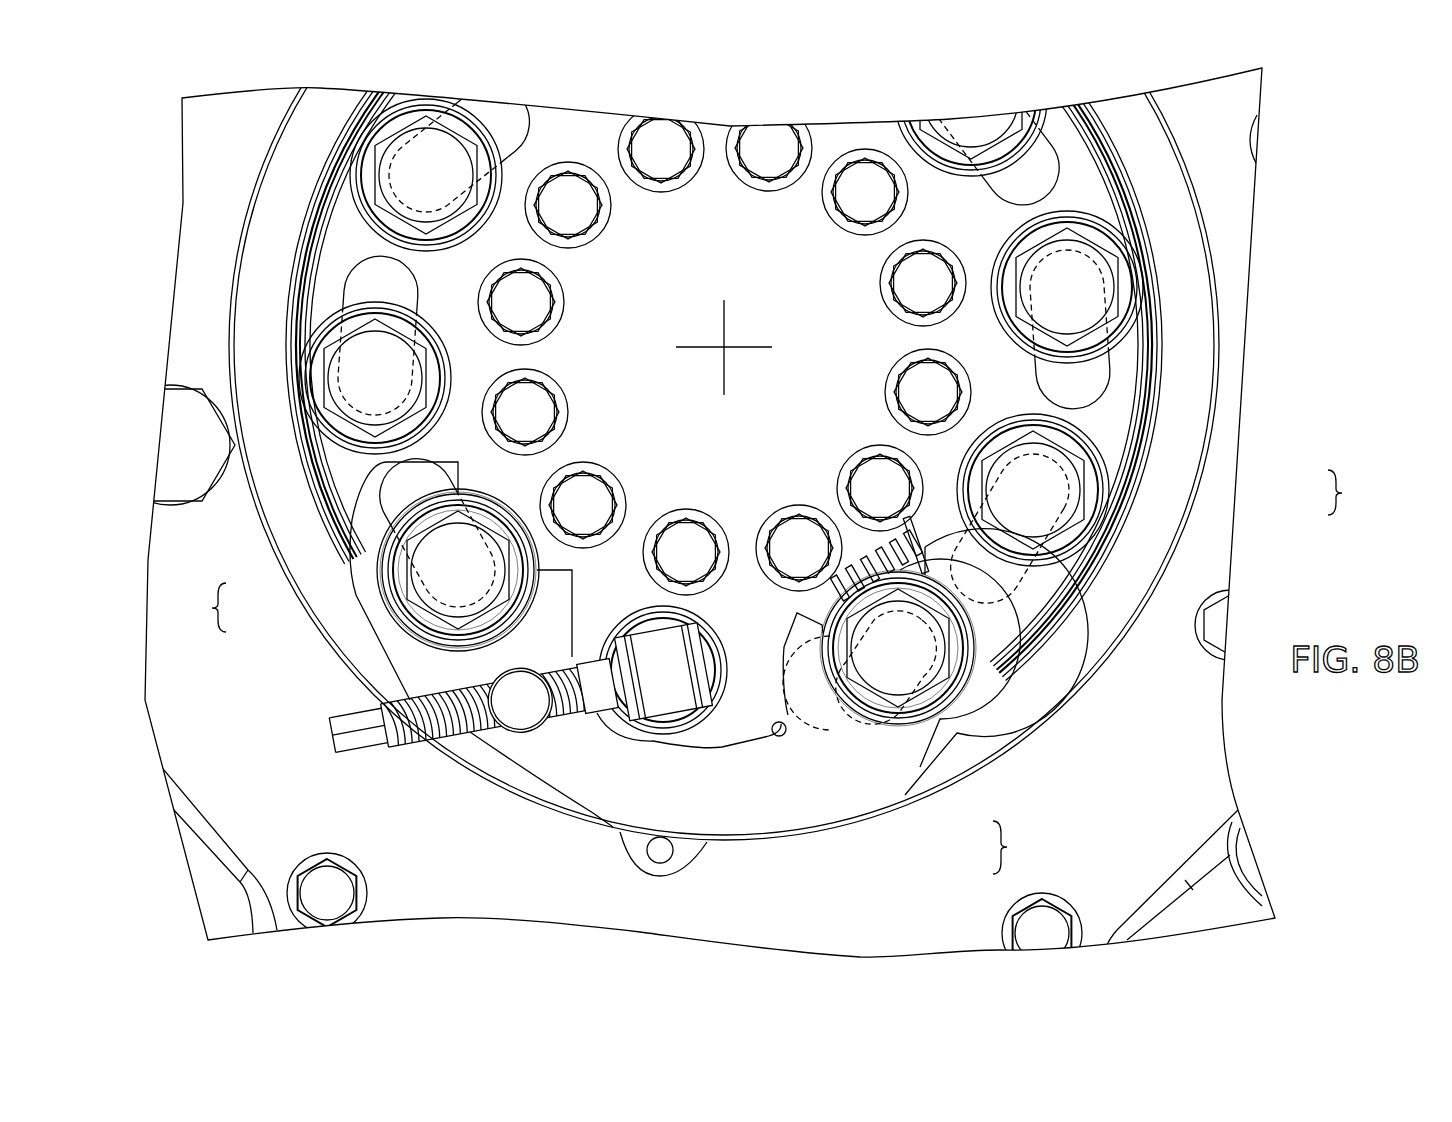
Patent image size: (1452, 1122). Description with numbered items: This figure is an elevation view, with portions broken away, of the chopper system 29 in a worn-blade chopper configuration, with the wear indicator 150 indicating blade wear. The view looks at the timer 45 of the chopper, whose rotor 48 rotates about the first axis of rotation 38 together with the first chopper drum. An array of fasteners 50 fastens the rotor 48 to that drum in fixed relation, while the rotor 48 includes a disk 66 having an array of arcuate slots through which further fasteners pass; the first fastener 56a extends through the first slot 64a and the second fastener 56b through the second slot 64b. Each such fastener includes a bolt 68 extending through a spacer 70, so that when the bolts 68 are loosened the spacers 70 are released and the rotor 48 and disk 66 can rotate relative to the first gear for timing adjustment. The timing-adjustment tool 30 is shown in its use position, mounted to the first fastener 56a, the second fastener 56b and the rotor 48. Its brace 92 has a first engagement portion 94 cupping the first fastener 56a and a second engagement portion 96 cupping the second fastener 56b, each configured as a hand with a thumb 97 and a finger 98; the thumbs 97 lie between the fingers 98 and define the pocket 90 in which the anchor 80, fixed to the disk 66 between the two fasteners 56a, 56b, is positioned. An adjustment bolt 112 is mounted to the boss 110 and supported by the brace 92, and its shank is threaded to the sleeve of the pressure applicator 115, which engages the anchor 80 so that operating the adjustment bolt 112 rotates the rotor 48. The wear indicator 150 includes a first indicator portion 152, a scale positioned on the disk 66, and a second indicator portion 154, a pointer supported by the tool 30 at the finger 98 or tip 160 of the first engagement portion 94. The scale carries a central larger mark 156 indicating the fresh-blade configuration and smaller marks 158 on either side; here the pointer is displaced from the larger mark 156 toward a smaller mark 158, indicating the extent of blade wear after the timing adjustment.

The chopper system 29 is at (574, 840).
The timing-adjustment tool 30 is at (538, 827).
The first axis of rotation 38 is at (720, 340).
The timer 45 is at (543, 140).
The rotor 48 is at (724, 317).
The fasteners 50 is at (545, 325).
The first fastener 56a is at (955, 716).
The second fastener 56b is at (575, 660).
The first slot 64a is at (898, 648).
The second slot 64b is at (452, 548).
The disk 66 is at (1117, 407).
The bolt 68 is at (405, 580).
The spacer 70 is at (400, 606).
The anchor 80 is at (641, 612).
The pocket 90 is at (786, 734).
The brace 92 is at (728, 806).
The first engagement portion 94 is at (985, 707).
The second engagement portion 96 is at (365, 618).
The thumb 97 is at (560, 598).
The finger 98 is at (403, 488).
The boss 110 is at (522, 702).
The adjustment bolt 112 is at (526, 742).
The pressure applicator 115 is at (660, 680).
The wear indicator 150 is at (1056, 553).
The first indicator portion 152 is at (922, 527).
The second indicator portion 154 is at (932, 546).
The larger mark 156 is at (862, 495).
The smaller marks 158 is at (862, 552).
The tip 160 is at (930, 573).